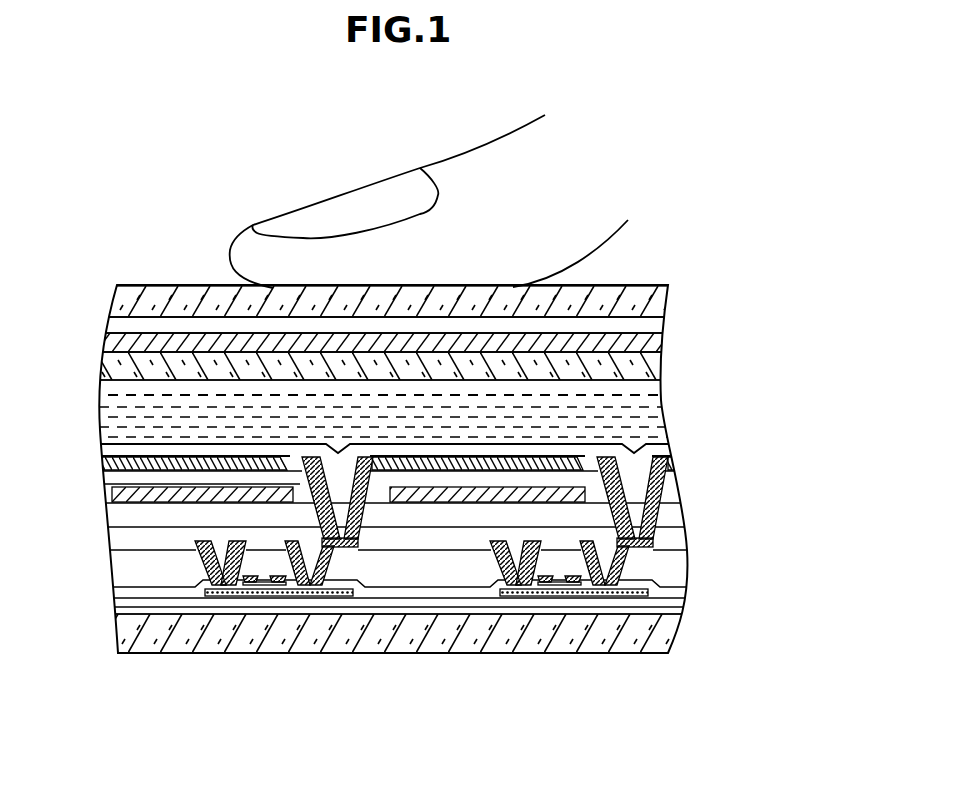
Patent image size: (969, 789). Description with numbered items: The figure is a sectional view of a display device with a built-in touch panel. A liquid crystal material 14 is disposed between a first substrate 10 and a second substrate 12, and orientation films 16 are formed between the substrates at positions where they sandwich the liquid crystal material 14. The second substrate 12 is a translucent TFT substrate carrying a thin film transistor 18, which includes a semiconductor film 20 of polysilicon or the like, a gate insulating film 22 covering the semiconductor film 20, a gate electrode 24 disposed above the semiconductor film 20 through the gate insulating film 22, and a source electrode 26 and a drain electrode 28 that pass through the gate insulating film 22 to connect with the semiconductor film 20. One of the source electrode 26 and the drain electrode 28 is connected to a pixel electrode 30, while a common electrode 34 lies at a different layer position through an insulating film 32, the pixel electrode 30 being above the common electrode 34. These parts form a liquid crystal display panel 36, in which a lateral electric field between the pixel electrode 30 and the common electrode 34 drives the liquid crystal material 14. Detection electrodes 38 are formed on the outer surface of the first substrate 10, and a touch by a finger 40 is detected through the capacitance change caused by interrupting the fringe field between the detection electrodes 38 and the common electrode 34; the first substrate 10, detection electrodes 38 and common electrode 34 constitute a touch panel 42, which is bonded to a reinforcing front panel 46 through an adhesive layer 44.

The first substrate 10 is at (648, 367).
The second substrate 12 is at (665, 637).
The liquid crystal material 14 is at (655, 427).
The orientation films 16 is at (652, 386).
The thin film transistor 18 is at (367, 585).
The semiconductor film 20 is at (285, 594).
The gate insulating film 22 is at (263, 585).
The gate electrode 24 is at (250, 582).
The source electrode 26 is at (348, 568).
The drain electrode 28 is at (205, 563).
The pixel electrode 30 is at (502, 467).
The insulating film 32 is at (590, 478).
The common electrode 34 is at (470, 500).
The liquid crystal display panel 36 is at (87, 357).
The detection electrodes 38 is at (655, 345).
The finger 40 is at (462, 162).
The touch panel 42 is at (62, 335).
The adhesive layer 44 is at (648, 325).
The front panel 46 is at (662, 300).